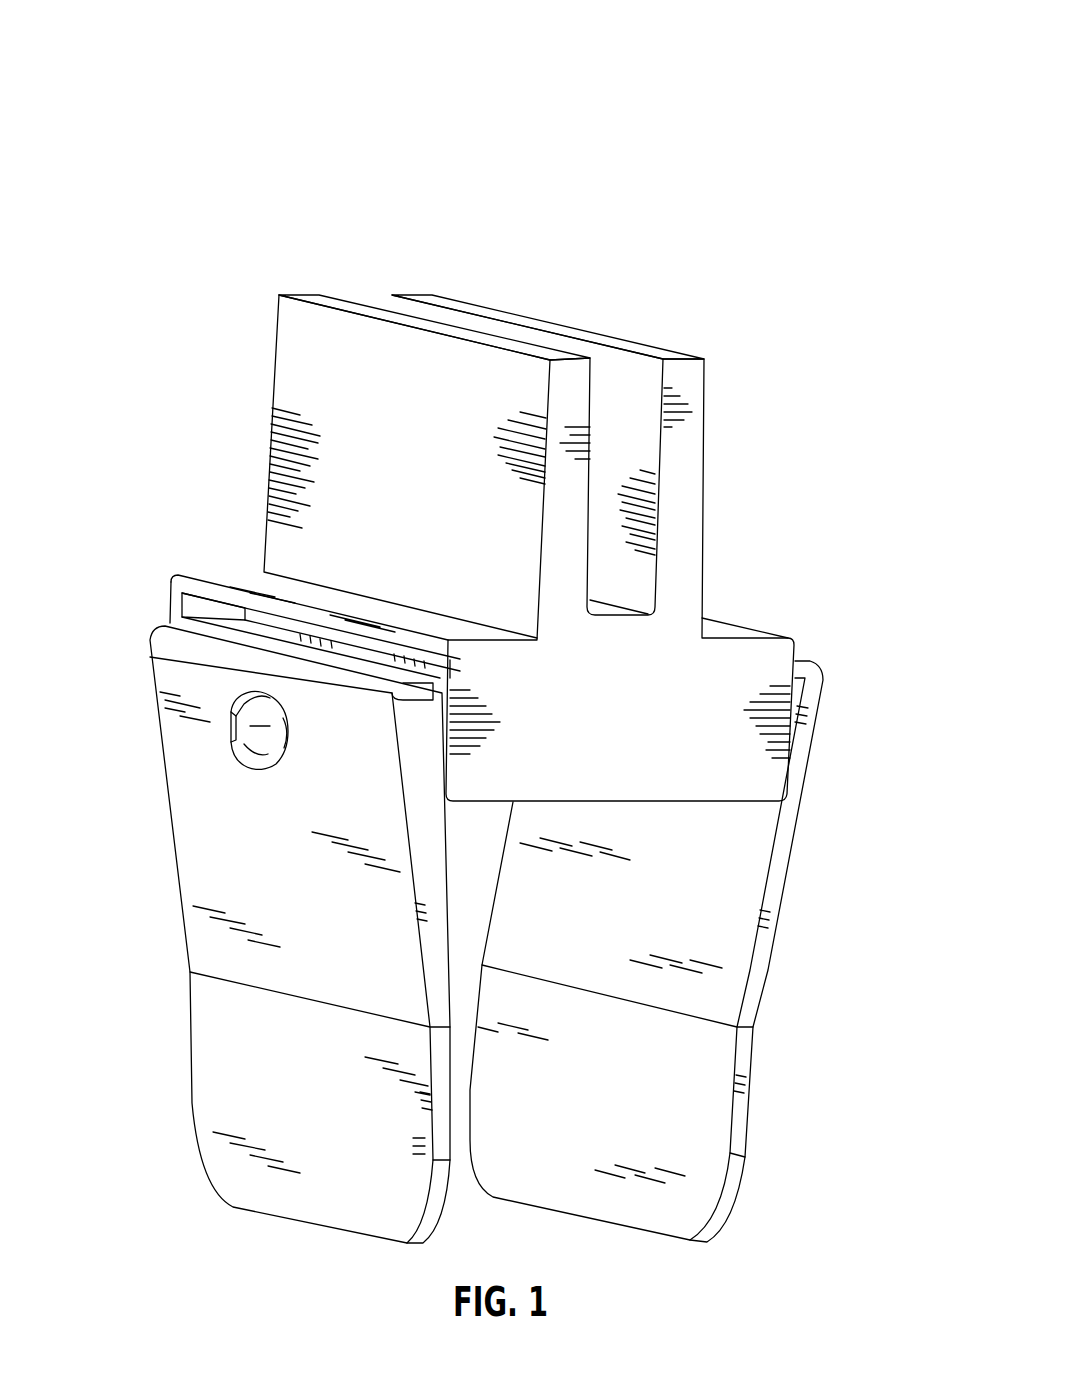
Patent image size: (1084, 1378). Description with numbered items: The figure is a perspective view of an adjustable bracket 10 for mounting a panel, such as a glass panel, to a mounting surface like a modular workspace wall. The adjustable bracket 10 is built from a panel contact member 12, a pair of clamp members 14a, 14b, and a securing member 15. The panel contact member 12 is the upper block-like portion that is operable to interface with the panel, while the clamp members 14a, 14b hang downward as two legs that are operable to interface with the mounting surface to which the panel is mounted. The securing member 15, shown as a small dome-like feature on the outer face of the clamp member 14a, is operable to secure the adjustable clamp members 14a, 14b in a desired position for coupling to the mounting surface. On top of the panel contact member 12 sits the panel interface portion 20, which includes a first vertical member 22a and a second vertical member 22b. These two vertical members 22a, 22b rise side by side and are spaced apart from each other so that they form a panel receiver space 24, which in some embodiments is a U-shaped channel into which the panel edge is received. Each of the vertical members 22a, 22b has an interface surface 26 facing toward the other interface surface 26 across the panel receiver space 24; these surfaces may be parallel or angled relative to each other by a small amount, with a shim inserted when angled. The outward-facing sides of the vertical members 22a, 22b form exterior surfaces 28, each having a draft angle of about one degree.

The adjustable bracket 10 is at (213, 140).
The panel contact member 12 is at (752, 561).
The clamp member 14a is at (168, 1006).
The clamp member 14b is at (790, 994).
The securing member 15 is at (228, 748).
The panel interface portion 20 is at (471, 377).
The first vertical member 22a is at (352, 308).
The second vertical member 22b is at (540, 326).
The panel receiver space 24 is at (615, 403).
The interface surface 26 is at (645, 428).
The exterior surface 28 is at (330, 372).